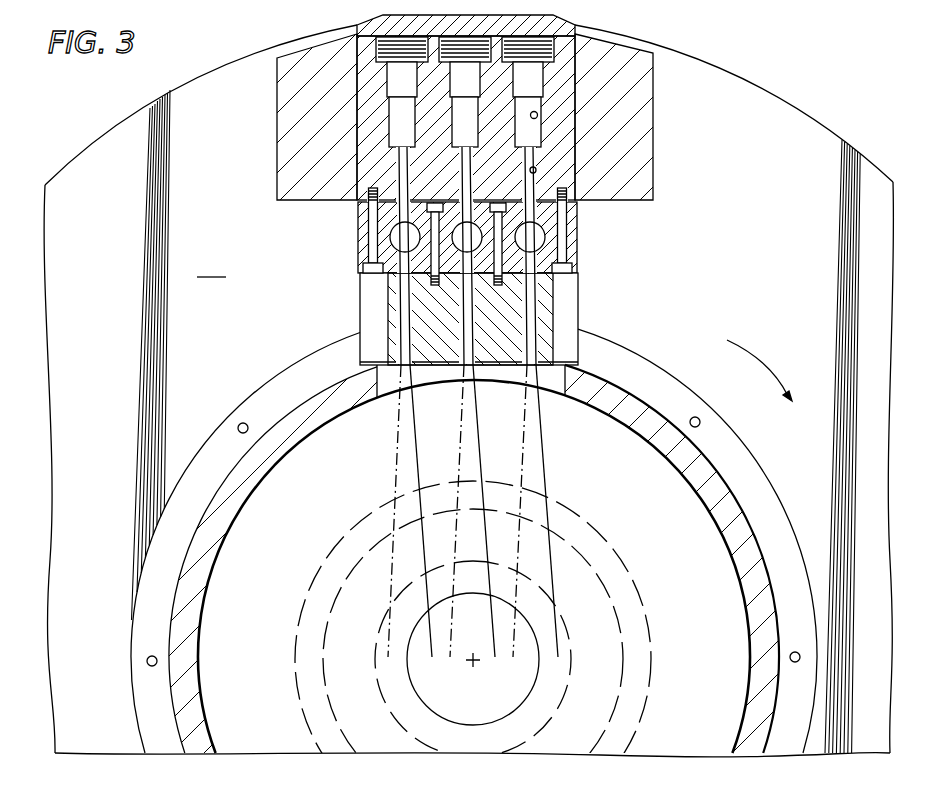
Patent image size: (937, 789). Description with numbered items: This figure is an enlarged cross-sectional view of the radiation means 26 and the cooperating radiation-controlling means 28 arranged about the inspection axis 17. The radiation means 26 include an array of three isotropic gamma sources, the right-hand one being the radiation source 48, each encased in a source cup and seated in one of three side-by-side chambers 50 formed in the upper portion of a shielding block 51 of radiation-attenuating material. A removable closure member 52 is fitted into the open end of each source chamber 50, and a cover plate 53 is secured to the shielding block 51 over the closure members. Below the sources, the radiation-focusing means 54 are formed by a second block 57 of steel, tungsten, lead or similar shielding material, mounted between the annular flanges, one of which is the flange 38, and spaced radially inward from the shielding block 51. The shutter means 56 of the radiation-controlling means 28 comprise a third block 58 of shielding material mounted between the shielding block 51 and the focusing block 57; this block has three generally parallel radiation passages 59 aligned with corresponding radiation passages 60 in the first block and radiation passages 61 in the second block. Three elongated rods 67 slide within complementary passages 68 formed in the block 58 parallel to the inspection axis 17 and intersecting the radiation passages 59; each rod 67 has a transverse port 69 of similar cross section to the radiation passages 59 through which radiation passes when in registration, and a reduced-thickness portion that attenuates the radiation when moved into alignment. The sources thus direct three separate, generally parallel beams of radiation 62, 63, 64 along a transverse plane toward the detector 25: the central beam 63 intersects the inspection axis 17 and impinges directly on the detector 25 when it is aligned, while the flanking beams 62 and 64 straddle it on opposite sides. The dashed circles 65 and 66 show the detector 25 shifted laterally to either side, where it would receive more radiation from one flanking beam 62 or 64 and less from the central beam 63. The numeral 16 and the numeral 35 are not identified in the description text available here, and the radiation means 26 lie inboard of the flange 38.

The cylinder bore 16 is at (616, 562).
The inspection axis 17 is at (476, 666).
The detector 25 is at (413, 700).
The radiation means 26 is at (357, 17).
The radiation-controlling means 28 is at (488, 256).
The cylinder liner 35 is at (242, 490).
The annular flange 38 is at (180, 355).
The isotropic radiation source 48 is at (543, 138).
The source chamber 50 is at (537, 116).
The shielding block 51 is at (565, 157).
The removable closure member 52 is at (542, 80).
The cover plate 53 is at (560, 20).
The radiation-focusing means 54 is at (493, 319).
The shutter means 56 is at (346, 231).
The second block 57 is at (392, 318).
The third block 58 is at (577, 219).
The radiation passage 59 is at (537, 281).
The radiation passage 60 is at (536, 171).
The radiation passage 61 is at (540, 353).
The radiation beam 62 is at (393, 439).
The radiation beam 63 is at (463, 437).
The radiation beam 64 is at (549, 438).
The dashed circle 65 is at (376, 675).
The dashed circle 66 is at (562, 699).
The elongated rod 67 is at (372, 258).
The complementary passage 68 is at (537, 238).
The transverse port 69 is at (455, 268).